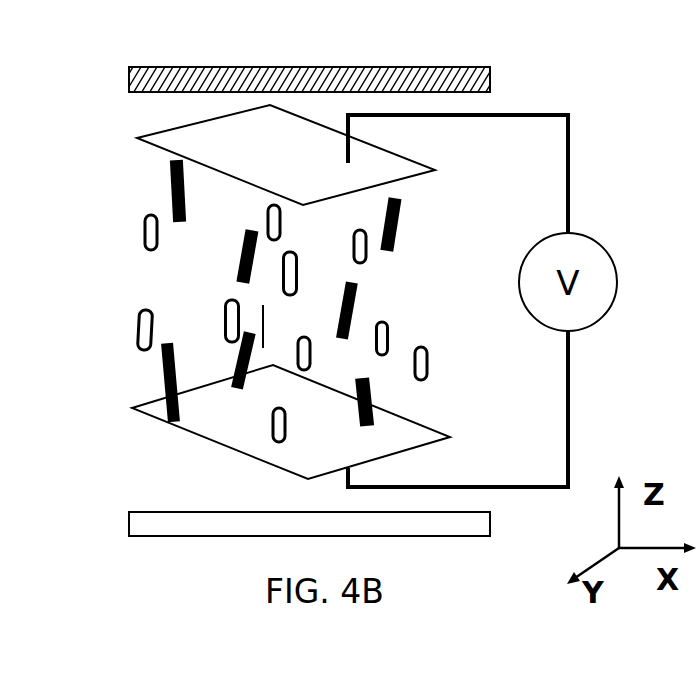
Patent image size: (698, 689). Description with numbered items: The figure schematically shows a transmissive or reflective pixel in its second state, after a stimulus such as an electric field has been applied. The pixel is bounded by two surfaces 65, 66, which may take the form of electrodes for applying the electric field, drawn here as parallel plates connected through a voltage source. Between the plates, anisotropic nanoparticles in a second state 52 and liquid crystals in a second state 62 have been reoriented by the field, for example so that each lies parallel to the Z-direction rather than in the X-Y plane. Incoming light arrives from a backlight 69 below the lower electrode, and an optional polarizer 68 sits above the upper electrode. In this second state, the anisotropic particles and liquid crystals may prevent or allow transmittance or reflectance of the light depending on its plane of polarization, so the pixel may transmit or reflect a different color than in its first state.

The polarizer 68 is at (102, 93).
The backlight 69 is at (117, 523).
The surface 65 is at (435, 163).
The surface 66 is at (445, 428).
The liquid crystal in a second state 62 is at (137, 330).
The anisotropic nanoparticle in a second state 52 is at (163, 388).